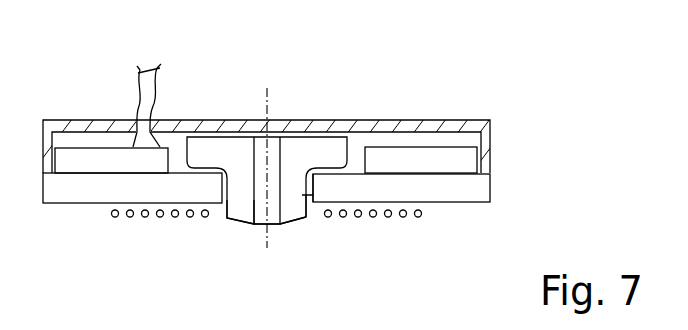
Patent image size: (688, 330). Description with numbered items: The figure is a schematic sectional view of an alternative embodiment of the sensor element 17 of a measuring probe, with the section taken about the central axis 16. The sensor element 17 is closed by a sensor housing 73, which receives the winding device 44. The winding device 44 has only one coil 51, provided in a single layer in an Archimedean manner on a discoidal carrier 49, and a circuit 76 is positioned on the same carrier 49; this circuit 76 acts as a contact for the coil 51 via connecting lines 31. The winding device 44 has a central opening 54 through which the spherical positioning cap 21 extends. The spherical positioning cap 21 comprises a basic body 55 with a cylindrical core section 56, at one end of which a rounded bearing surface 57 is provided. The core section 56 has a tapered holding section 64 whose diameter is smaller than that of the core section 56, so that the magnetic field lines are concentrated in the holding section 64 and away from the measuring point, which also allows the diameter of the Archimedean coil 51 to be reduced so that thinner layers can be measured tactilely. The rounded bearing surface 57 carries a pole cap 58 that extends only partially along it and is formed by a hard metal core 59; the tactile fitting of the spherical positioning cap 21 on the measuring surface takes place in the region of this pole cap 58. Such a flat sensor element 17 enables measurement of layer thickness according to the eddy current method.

The sensor element 17 is at (431, 79).
The central axis 16 is at (268, 103).
The connecting lines 31 is at (138, 98).
The housing 73 is at (457, 125).
The circuit 76 is at (465, 163).
The carrier 49 is at (477, 188).
The coil 51 is at (210, 223).
The winding device 44 is at (410, 238).
The core section 56 is at (348, 148).
The hard metal core 59 is at (276, 222).
The pole cap 58 is at (255, 228).
The spherical positioning cap 21 is at (239, 243).
The basic body 55 is at (237, 223).
The rounded bearing surface 57 is at (300, 238).
The central opening 54 is at (309, 208).
The holding section 64 is at (313, 187).